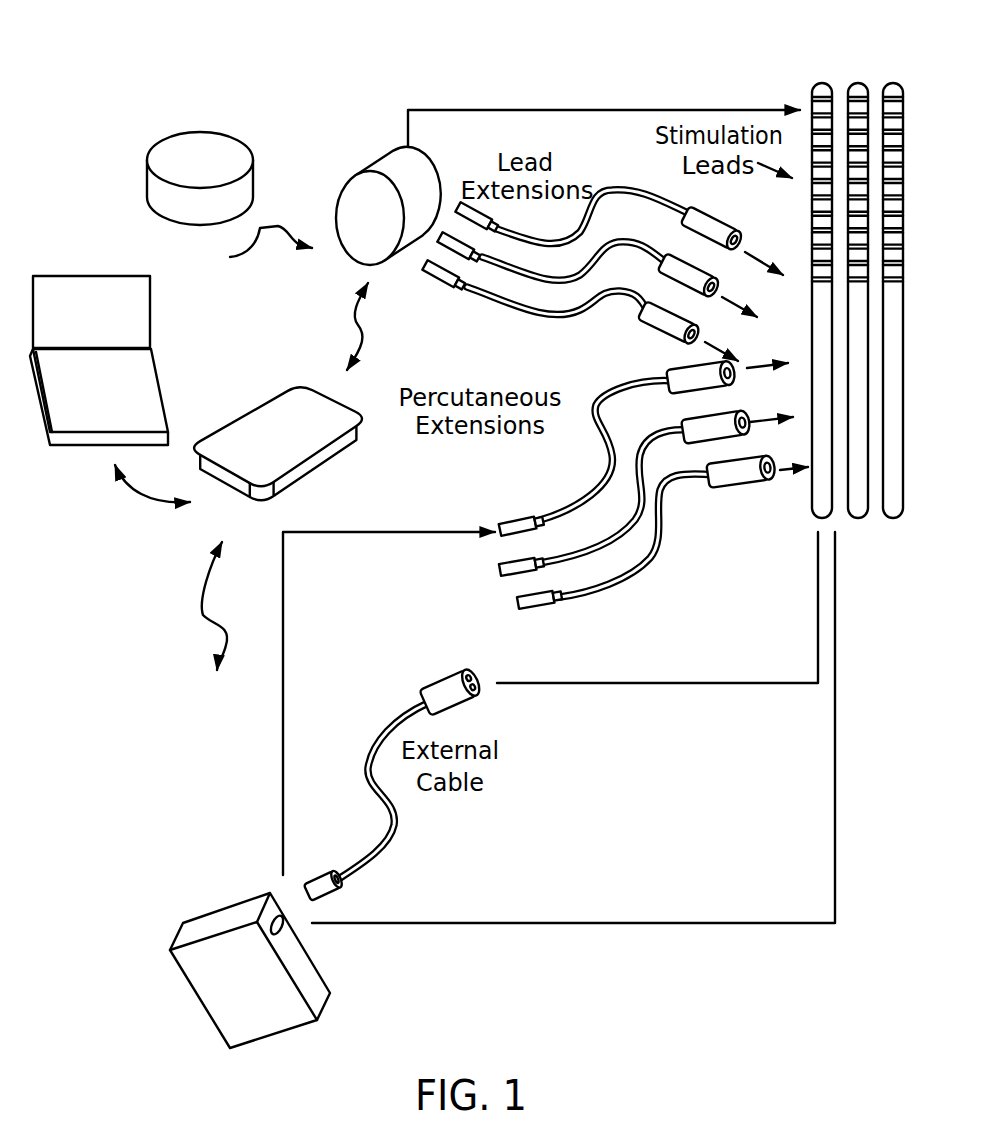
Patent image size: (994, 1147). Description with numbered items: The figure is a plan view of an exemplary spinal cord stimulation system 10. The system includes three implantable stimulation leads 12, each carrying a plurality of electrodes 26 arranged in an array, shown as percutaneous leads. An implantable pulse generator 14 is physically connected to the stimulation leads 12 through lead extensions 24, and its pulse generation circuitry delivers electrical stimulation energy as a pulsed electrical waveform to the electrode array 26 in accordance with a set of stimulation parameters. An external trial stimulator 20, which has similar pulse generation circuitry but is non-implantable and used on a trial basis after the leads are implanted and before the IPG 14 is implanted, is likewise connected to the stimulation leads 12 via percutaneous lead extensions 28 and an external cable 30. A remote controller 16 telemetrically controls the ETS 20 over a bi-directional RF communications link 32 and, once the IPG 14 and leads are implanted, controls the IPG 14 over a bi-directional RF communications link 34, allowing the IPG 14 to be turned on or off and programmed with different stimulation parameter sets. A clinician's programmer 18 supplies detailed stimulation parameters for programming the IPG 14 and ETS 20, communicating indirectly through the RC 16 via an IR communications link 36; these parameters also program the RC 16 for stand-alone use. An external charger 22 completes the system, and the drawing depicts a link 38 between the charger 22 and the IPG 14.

The spinal cord stimulation (SCS) system 10 is at (574, 48).
The implantable stimulation leads 12 is at (893, 82).
The implantable pulse generator (IPG) 14 is at (370, 168).
The remote controller (RC) 16 is at (287, 402).
The clinician's programmer (CP) 18 is at (75, 292).
The external trial stimulator (ETS) 20 is at (222, 922).
The external charger 22 is at (200, 142).
The lead extensions 24 is at (624, 293).
The electrodes 26 is at (822, 124).
The percutaneous lead extensions 28 is at (597, 545).
The external cable 30 is at (390, 720).
The bi-directional RF communications link 32 is at (208, 652).
The bi-directional RF communications link 34 is at (365, 343).
The IR communications link 36 is at (138, 500).
The inductive link between charger and IPG 38 is at (254, 249).